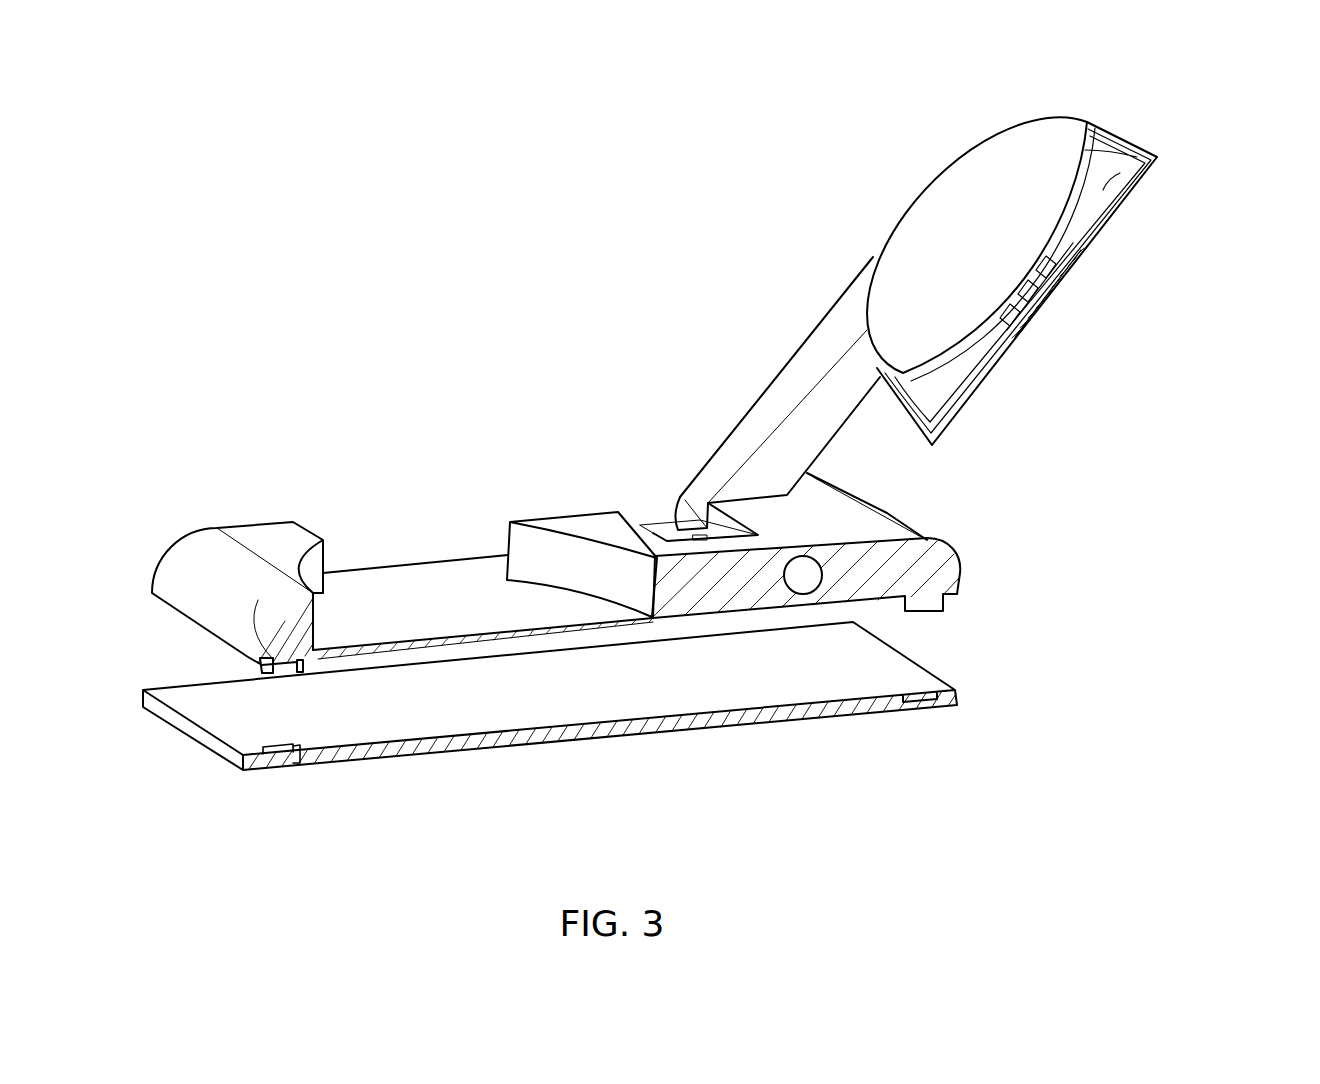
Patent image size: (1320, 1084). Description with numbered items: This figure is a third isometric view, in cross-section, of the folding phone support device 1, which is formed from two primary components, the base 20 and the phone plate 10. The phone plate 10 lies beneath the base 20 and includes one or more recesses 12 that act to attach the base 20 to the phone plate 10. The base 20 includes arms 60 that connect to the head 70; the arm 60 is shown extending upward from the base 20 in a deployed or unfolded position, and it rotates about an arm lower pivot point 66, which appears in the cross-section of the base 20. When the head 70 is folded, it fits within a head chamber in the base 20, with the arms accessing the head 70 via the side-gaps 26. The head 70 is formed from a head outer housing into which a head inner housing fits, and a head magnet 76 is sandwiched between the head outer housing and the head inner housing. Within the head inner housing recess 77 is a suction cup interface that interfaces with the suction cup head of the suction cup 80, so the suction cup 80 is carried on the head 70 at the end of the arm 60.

The folding phone support device 1 is at (418, 367).
The phone plate 10 is at (592, 707).
The recess 12 is at (274, 766).
The base 20 is at (883, 513).
The side-gap 26 is at (440, 522).
The arm 60 is at (798, 373).
The arm lower pivot point 66 is at (808, 576).
The head 70 is at (1163, 123).
The head magnet 76 is at (1058, 274).
The head inner housing recess 77 is at (1140, 187).
The suction cup 80 is at (1010, 167).